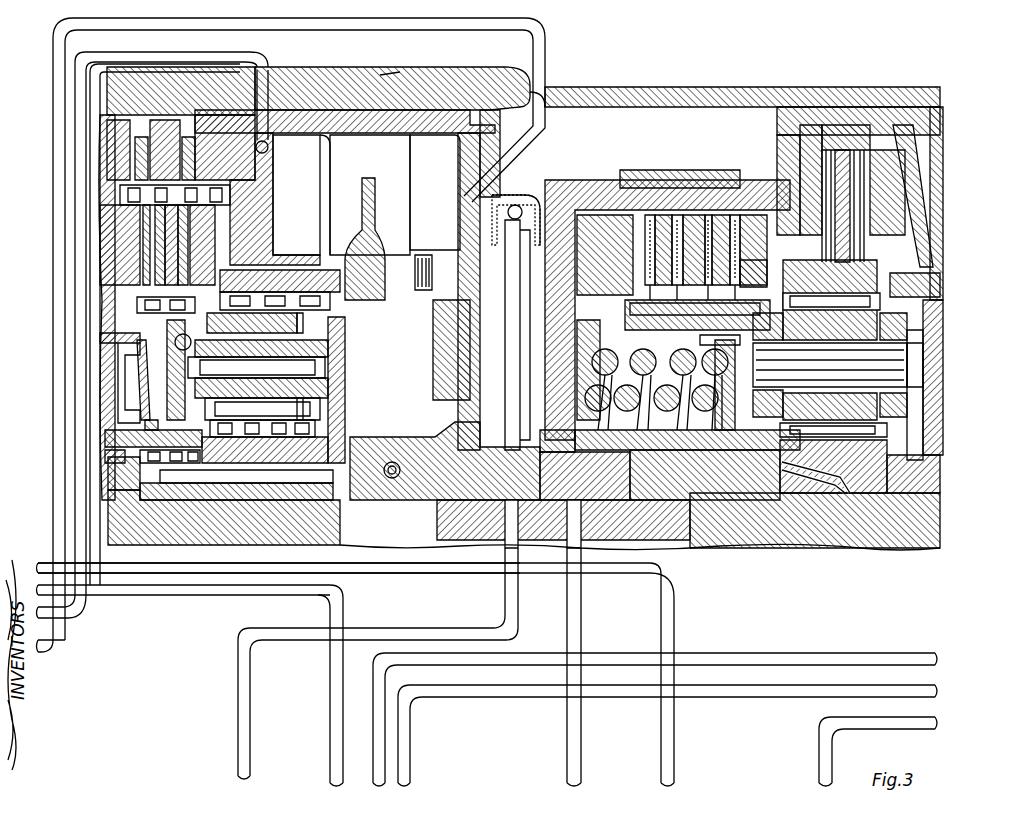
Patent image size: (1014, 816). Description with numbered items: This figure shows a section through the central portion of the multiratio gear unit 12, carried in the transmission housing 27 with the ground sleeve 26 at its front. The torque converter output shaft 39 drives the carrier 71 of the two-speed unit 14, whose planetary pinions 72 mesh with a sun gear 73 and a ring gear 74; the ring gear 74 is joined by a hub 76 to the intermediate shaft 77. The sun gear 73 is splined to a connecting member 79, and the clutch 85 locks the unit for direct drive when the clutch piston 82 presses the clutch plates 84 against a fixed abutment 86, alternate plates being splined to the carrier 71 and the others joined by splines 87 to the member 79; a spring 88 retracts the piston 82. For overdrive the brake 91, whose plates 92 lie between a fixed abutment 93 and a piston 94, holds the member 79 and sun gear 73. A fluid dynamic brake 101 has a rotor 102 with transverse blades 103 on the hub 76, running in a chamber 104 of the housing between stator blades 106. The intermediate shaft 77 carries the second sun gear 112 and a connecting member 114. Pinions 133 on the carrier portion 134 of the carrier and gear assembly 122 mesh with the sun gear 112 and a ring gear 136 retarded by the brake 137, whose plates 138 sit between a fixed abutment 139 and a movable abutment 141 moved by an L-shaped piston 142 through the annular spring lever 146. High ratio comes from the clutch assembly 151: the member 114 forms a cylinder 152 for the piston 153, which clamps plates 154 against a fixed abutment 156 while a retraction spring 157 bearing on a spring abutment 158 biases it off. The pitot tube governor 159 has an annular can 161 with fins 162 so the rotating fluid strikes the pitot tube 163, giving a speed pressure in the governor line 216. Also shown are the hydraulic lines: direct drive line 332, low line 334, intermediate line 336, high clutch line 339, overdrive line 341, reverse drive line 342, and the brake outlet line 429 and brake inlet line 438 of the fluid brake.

The multiratio gear unit 12 is at (596, 84).
The two-speed unit 14 is at (408, 68).
The ground sleeve 26 is at (108, 487).
The transmission housing 27 is at (322, 87).
The torque converter output shaft 39 is at (115, 527).
The carrier 71 is at (170, 312).
The planetary pinions 72 is at (257, 320).
The sun gear 73 is at (210, 472).
The ring gear 74 is at (300, 264).
The hub 76 is at (362, 423).
The intermediate shaft 77 is at (718, 545).
The connecting member 79 is at (110, 195).
The clutch piston 82 is at (100, 343).
The clutch plates 84 is at (190, 262).
The clutch 85 is at (120, 245).
The fixed abutment 86 is at (205, 240).
The splines 87 is at (195, 183).
The spring 88 is at (138, 385).
The brake 91 is at (104, 104).
The plates 92 is at (168, 125).
The fixed abutment 93 is at (225, 163).
The piston 94 is at (112, 165).
The fluid dynamic brake 101 is at (462, 108).
The rotor 102 is at (365, 225).
The transverse blades 103 is at (395, 152).
The chamber 104 is at (350, 130).
The stator blades 106 is at (415, 185).
The second sun gear 112 is at (850, 447).
The connecting member 114 is at (790, 545).
The carrier and gear assembly 122 is at (920, 369).
The pinions 133 is at (880, 360).
The carrier portion 134 is at (782, 300).
The ring gear 136 is at (865, 258).
The brake 137 is at (925, 91).
The plates 138 is at (800, 145).
The fixed abutment 139 is at (805, 165).
The movable abutment 141 is at (905, 218).
The L-shaped piston 142 is at (940, 205).
The annular spring lever 146 is at (912, 178).
The clutch assembly 151 is at (650, 174).
The cylinder 152 is at (580, 318).
The piston 153 is at (590, 215).
The plates 154 is at (710, 218).
The fixed abutment 156 is at (755, 262).
The retraction spring 157 is at (672, 355).
The spring abutment 158 is at (735, 345).
The pitot tube governor 159 is at (522, 195).
The annular can 161 is at (518, 196).
The fins 162 is at (548, 225).
The pitot tube 163 is at (480, 335).
The governor line 216 is at (238, 732).
The direct drive line 332 is at (667, 742).
The low line 334 is at (404, 750).
The intermediate line 336 is at (380, 718).
The high clutch line 339 is at (574, 742).
The overdrive line 341 is at (332, 742).
The reverse drive line 342 is at (822, 765).
The brake outlet line 429 is at (72, 630).
The brake inlet line 438 is at (62, 476).